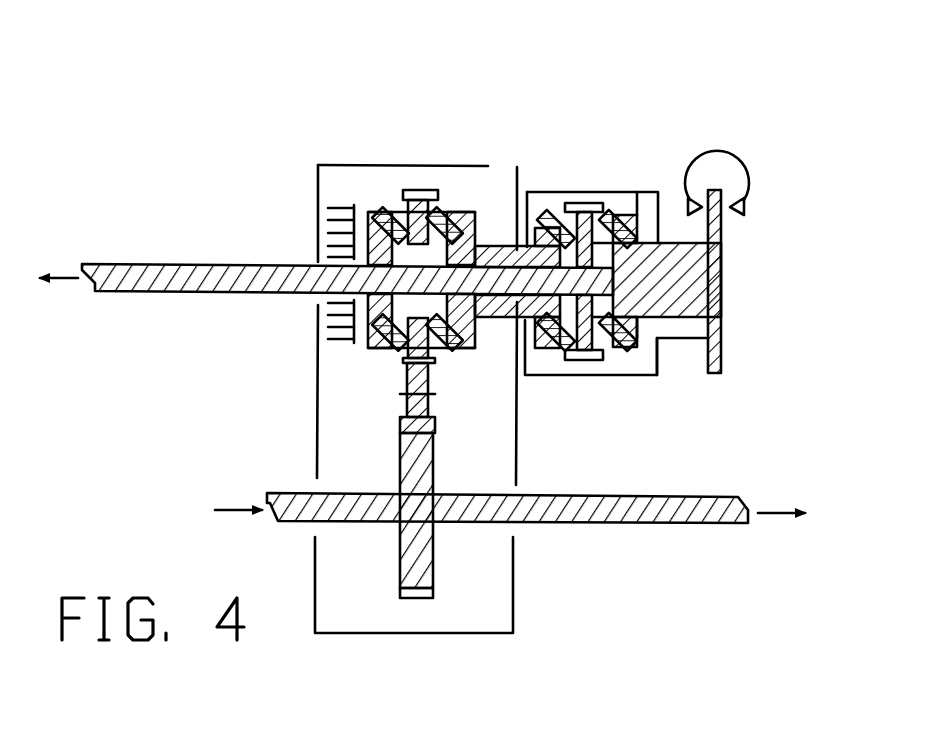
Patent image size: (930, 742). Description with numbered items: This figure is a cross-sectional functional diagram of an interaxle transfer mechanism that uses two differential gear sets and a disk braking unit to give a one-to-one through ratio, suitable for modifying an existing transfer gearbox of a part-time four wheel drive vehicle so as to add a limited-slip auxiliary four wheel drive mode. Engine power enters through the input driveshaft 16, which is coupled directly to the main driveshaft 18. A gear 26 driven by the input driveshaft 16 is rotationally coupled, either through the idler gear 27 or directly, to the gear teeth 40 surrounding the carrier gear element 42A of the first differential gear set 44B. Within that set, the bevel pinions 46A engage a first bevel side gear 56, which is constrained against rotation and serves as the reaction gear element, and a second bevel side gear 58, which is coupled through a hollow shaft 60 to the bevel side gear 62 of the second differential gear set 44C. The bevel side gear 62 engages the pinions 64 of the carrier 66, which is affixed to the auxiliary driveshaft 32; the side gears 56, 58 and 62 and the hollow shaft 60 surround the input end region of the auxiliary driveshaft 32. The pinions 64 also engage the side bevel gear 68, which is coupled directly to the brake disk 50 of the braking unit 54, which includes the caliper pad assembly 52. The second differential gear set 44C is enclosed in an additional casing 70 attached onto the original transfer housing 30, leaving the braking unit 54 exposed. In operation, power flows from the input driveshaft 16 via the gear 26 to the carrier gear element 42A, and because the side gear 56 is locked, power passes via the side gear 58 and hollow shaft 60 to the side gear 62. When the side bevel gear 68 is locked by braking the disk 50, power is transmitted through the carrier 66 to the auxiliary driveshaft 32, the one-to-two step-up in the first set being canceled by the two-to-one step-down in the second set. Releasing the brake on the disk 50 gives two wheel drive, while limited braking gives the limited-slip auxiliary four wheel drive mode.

The input driveshaft 16 is at (300, 492).
The main driveshaft 18 is at (612, 522).
The gear 26 is at (435, 450).
The idler gear 27 is at (400, 424).
The transfer housing 30 is at (320, 163).
The auxiliary driveshaft 32 is at (195, 265).
The gear teeth 40 is at (403, 195).
The carrier gear element 42A is at (445, 200).
The differential gear set 44B is at (418, 110).
The second differential gear set 44C is at (582, 110).
The bevel pinions 46A is at (463, 206).
The brake disk 50 is at (725, 240).
The caliper pad assembly 52 is at (752, 182).
The braking unit 54 is at (713, 110).
The first bevel side gear 56 is at (342, 208).
The second bevel side gear 58 is at (488, 242).
The hollow shaft 60 is at (515, 192).
The bevel side gear 62 is at (541, 205).
The pinions 64 is at (623, 212).
The carrier 66 is at (607, 360).
The side bevel gear 68 is at (667, 215).
The additional casing 70 is at (658, 372).